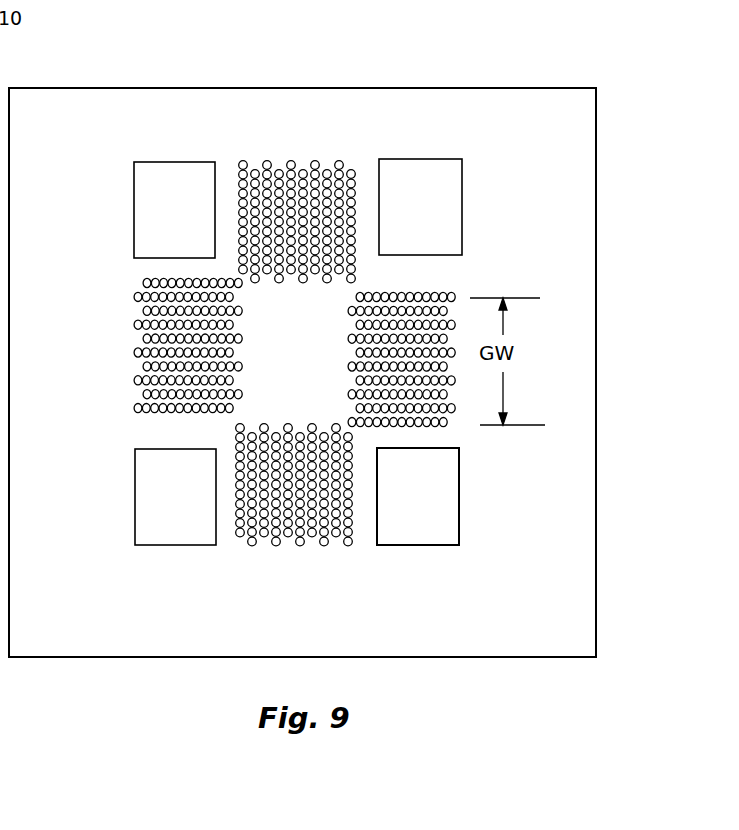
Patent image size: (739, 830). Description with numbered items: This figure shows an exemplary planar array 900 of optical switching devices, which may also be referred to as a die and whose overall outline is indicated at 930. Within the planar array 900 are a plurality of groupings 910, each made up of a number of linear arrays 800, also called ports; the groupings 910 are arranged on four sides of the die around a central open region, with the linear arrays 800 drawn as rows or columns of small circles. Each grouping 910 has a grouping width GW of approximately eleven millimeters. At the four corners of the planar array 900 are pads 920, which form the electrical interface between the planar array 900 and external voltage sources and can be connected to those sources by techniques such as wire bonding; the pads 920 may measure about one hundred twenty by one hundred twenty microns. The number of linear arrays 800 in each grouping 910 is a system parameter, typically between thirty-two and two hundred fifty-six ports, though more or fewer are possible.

The substrate / package body 930 is at (96, 118).
The pads 920 is at (164, 185).
The planar array 900 is at (247, 324).
The grouping 910 is at (247, 356).
The linear array 800 is at (237, 538).